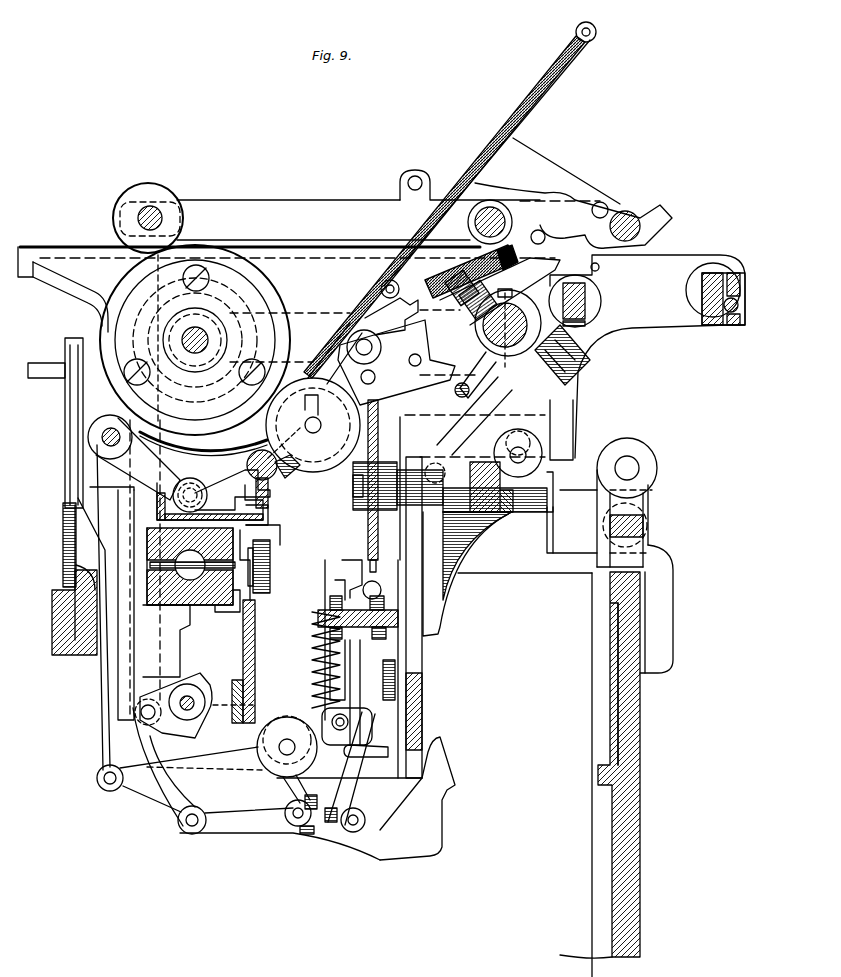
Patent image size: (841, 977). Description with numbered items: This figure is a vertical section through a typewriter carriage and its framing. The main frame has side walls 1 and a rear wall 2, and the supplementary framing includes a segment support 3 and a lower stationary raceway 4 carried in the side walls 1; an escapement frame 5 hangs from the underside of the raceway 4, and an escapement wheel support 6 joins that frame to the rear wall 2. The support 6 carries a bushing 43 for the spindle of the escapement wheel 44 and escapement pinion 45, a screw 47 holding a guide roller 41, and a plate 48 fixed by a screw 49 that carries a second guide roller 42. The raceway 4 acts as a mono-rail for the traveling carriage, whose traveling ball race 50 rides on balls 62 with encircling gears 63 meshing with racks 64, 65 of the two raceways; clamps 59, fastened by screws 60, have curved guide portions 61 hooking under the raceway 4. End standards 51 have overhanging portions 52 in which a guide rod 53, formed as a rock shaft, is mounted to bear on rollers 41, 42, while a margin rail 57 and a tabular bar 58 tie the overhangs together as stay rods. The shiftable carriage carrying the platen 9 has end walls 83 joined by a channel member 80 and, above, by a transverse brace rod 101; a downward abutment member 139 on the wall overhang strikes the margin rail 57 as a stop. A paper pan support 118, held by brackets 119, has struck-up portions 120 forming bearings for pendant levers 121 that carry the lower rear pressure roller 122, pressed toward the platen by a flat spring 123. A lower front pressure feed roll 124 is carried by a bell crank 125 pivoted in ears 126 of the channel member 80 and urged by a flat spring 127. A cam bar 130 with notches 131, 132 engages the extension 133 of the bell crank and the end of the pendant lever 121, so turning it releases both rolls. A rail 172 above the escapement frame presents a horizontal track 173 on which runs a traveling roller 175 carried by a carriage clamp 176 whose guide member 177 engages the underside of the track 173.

The side walls 1 is at (434, 670).
The rear wall 2 is at (637, 855).
The segment support 3 is at (52, 620).
The lower stationary raceway 4 is at (163, 593).
The escapement frame 5 is at (423, 718).
The escapement wheel support 6 is at (512, 513).
The platen 9 is at (185, 258).
The guide roller 41 is at (567, 393).
The guide roller 42 is at (492, 285).
The bushing 43 is at (489, 513).
The escapement wheel 44 is at (367, 536).
The escapement pinion 45 is at (393, 497).
The screw 47 is at (557, 362).
The plate 48 is at (493, 410).
The screw 49 is at (468, 392).
The traveling ball race 50 is at (268, 508).
The end standards 51 is at (157, 503).
The overhanging portions 52 is at (675, 256).
The guide rod 53 is at (493, 327).
The margin rail 57 is at (586, 300).
The tabular bar 58 is at (723, 280).
The clamps 59 is at (285, 545).
The screws 60 is at (272, 532).
The guide portions 61 is at (227, 617).
The balls 62 is at (148, 540).
The encircling gears 63 is at (77, 568).
The rack 64 is at (150, 565).
The rack 65 is at (243, 615).
The channel member 80 is at (155, 510).
The end walls 83 is at (378, 271).
The transverse brace rod 101 is at (628, 222).
The paper pan support 118 is at (396, 362).
The brackets 119 is at (420, 358).
The struck-up portions 120 is at (368, 320).
The pendant levers 121 is at (376, 375).
The lower rear pressure roller 122 is at (277, 403).
The flat spring 123 is at (355, 385).
The lower front pressure feed roll 124 is at (96, 437).
The bell crank 125 is at (92, 417).
The ears 126 is at (155, 474).
The flat spring 127 is at (245, 495).
The cam bar 130 is at (293, 426).
The cam portion 131 is at (268, 452).
The cam portion 132 is at (292, 476).
The extension 133 is at (227, 457).
The abutment member 139 is at (592, 263).
The rail 172 is at (309, 660).
The horizontal track 173 is at (262, 640).
The traveling roller 175 is at (268, 562).
The carriage clamp 176 is at (270, 492).
The guide member 177 is at (262, 625).